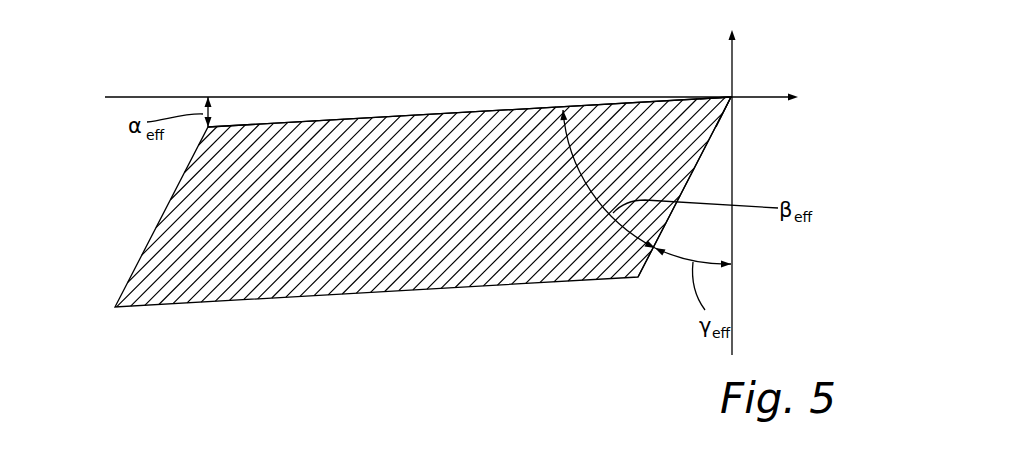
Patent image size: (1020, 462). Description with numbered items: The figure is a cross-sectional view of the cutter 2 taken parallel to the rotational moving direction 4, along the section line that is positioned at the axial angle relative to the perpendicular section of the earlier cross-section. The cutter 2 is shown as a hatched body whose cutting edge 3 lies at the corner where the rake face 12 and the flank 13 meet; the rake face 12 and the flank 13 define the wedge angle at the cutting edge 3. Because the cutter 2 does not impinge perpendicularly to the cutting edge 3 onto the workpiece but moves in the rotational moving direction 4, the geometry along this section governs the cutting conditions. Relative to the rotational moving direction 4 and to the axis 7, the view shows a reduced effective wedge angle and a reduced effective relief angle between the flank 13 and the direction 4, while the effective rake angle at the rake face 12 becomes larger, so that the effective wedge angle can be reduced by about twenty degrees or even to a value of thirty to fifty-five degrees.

The cutter 2 is at (183, 221).
The cutting edge 3 is at (732, 96).
The rotational moving direction 4 is at (760, 100).
The normal axis 7 is at (731, 62).
The rake face 12 is at (672, 217).
The flank 13 is at (517, 109).